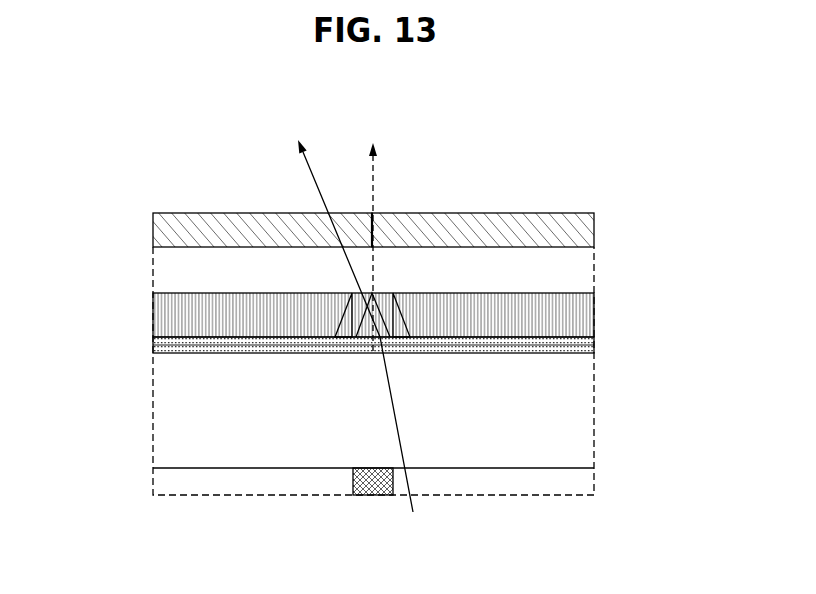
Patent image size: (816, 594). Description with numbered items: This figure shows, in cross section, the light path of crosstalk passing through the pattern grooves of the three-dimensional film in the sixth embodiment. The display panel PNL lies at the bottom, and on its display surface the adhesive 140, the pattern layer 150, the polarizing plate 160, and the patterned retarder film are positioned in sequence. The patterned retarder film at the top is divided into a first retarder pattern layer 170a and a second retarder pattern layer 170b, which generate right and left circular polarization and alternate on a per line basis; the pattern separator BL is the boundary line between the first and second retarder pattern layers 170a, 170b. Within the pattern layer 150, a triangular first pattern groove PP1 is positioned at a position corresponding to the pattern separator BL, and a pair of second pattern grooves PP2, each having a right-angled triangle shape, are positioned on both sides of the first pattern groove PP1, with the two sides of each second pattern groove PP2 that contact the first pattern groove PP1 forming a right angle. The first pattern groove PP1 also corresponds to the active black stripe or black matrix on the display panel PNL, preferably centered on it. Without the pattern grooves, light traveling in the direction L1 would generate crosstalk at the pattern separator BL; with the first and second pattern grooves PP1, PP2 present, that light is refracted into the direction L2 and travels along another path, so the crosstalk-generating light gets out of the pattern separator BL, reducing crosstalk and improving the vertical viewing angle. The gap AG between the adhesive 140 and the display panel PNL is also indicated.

The first retarder pattern layer 170a is at (150, 229).
The second retarder pattern layer 170b is at (595, 231).
The polarizing plate 160 is at (150, 270).
The pattern layer 150 is at (150, 320).
The adhesive 140 is at (595, 342).
The first pattern groove PP1 is at (386, 308).
The second pattern grooves PP2 is at (344, 313).
The display panel PNL is at (160, 427).
The air gap AG is at (402, 333).
The pattern separator BL is at (372, 211).
The direction L1 is at (373, 234).
The direction L2 is at (349, 313).